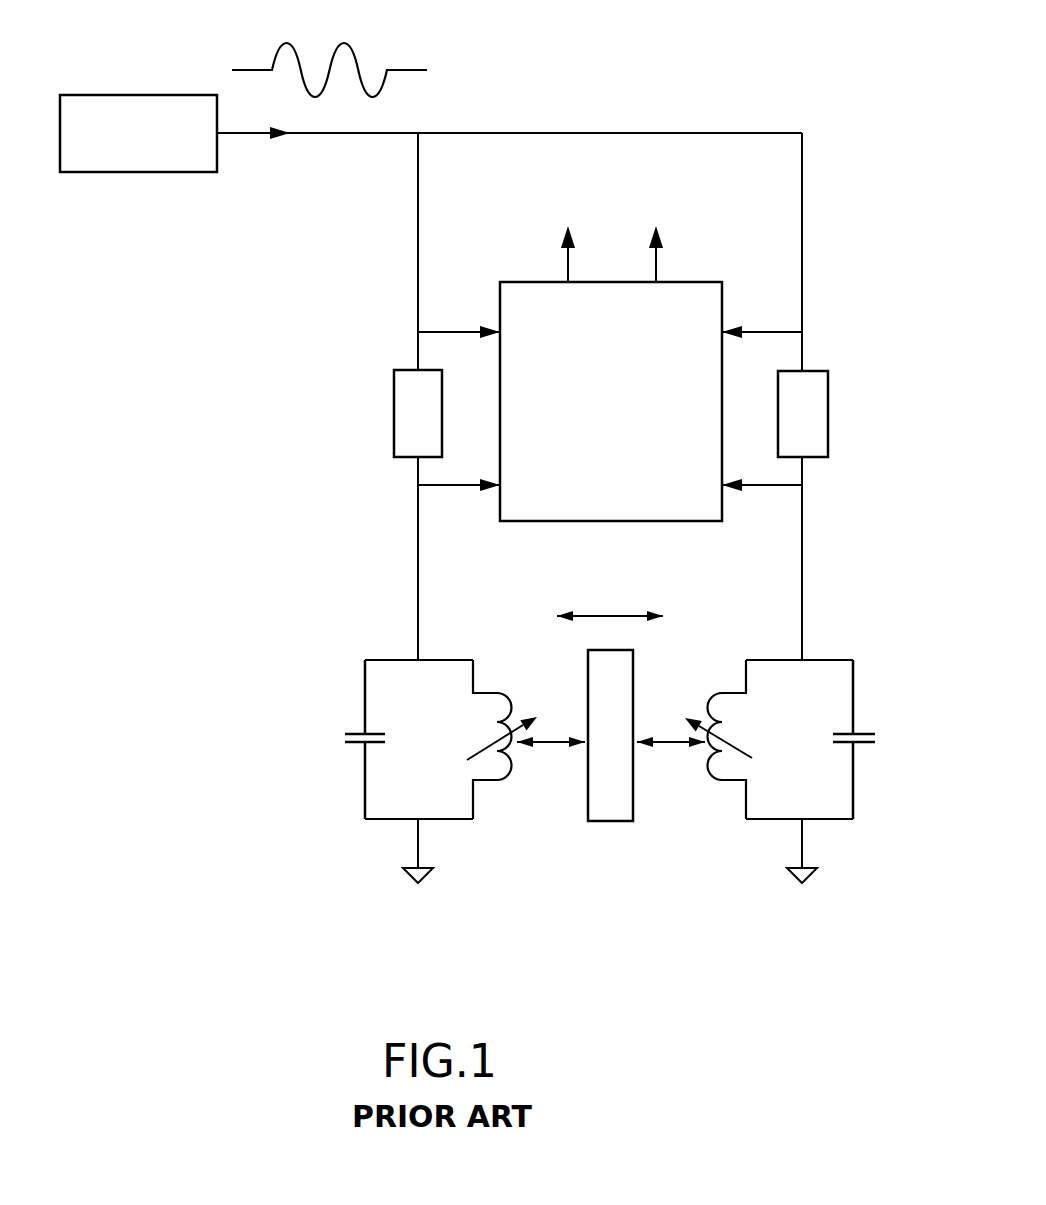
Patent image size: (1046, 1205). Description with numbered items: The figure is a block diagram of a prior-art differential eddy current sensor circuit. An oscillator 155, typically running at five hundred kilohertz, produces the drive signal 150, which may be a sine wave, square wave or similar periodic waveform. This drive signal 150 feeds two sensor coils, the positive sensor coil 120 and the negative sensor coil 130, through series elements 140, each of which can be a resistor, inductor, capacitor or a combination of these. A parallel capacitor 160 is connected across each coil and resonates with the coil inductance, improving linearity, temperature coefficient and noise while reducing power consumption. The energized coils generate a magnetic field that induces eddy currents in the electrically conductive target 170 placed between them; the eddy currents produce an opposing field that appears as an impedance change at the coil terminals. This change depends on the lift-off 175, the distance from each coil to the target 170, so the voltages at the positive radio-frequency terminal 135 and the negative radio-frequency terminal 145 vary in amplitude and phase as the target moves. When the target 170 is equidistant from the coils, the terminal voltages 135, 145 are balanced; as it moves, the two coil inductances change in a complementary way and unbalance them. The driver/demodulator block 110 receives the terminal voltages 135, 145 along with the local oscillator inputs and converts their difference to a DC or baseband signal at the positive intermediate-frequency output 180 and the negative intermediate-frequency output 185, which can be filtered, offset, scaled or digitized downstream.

The driver/demodulator block 110 is at (724, 293).
The sensor coil Lsns+ 120 is at (484, 692).
The sensor coil Lsns- 130 is at (738, 692).
The RF+ terminal 135 is at (450, 487).
The series element Zs 140 is at (395, 451).
The RF- terminal 145 is at (770, 487).
The drive signal Vdrv 150 is at (742, 133).
The oscillator 155 is at (165, 172).
The parallel capacitor Cp 160 is at (332, 757).
The conductive target 170 is at (588, 797).
The lift-off 175 is at (551, 738).
The IF+ output 180 is at (565, 262).
The IF- output 185 is at (658, 262).